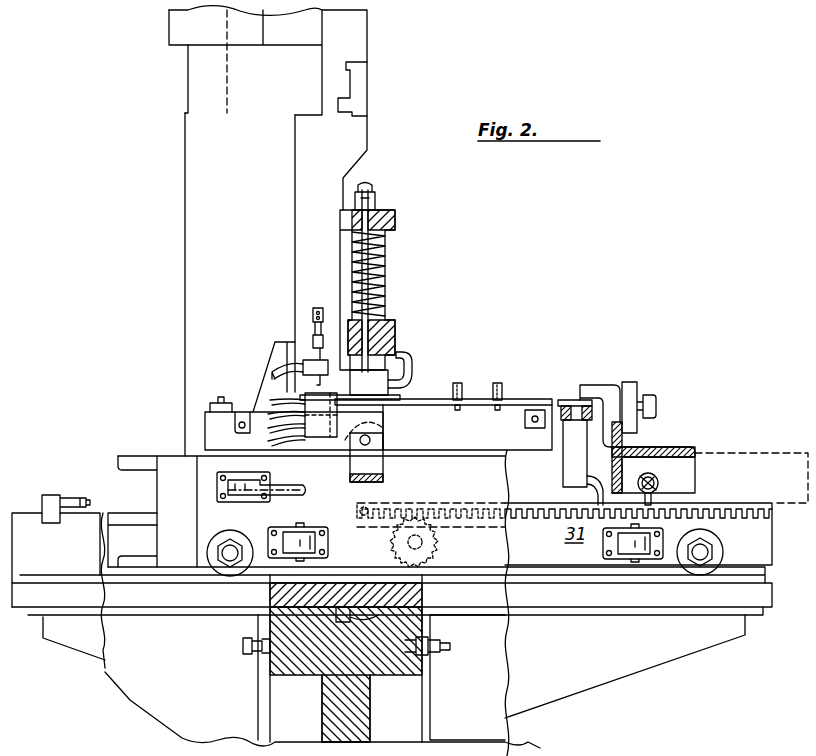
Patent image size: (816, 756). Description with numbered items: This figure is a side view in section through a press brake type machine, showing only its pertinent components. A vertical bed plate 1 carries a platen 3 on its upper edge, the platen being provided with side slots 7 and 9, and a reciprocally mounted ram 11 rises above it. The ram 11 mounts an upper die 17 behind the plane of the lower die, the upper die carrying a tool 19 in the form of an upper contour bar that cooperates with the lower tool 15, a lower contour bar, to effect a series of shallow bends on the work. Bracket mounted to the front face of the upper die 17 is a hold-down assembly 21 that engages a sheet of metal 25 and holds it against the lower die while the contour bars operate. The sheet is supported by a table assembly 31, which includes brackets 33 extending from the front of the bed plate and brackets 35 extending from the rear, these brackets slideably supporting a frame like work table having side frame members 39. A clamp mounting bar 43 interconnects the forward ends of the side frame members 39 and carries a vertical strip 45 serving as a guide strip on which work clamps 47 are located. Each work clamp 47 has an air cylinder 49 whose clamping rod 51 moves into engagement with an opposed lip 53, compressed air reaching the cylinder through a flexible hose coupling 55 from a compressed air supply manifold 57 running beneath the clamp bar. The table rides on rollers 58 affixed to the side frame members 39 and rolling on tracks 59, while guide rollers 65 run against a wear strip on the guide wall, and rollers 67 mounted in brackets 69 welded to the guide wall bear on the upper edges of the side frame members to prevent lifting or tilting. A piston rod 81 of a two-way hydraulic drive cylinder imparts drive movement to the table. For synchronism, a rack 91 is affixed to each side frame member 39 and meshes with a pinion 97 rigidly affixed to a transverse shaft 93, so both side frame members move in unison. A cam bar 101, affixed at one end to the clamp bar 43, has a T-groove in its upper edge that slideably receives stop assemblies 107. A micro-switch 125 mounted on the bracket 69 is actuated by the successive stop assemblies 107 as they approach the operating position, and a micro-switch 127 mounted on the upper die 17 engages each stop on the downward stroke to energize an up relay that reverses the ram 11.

The vertical bed plate 1 is at (322, 724).
The platen 3 is at (378, 668).
The side slot 7 is at (426, 653).
The side slot 9 is at (268, 652).
The ram 11 is at (368, 34).
The tool 15 is at (342, 403).
The upper die 17 is at (300, 242).
The tool 19 is at (362, 372).
The hold-down assembly 21 is at (416, 300).
The sheet of metal 25 is at (480, 405).
The table assembly 31 is at (553, 655).
The bracket 33 is at (532, 720).
The bracket 35 is at (74, 658).
The side frame member 39 is at (770, 534).
The clamp mounting bar 43 is at (690, 447).
The vertical strip 45 is at (625, 447).
The work clamp 47 is at (622, 412).
The air cylinder 49 is at (570, 468).
The clamping rod 51 is at (539, 429).
The lip 53 is at (576, 400).
The flexible hose coupling 55 is at (587, 492).
The compressed air supply manifold 57 is at (660, 480).
The roller 58 is at (220, 572).
The track 59 is at (747, 572).
The guide roller 65 is at (290, 538).
The roller 67 is at (384, 445).
The bracket 69 is at (355, 462).
The piston rod 81 is at (302, 486).
The rack 91 is at (462, 526).
The shaft 93 is at (431, 578).
The pinion 97 is at (431, 548).
The cam bar 101 is at (462, 448).
The stop assembly 107 is at (498, 378).
The micro-switch 125 is at (317, 400).
The micro-switch 127 is at (315, 363).